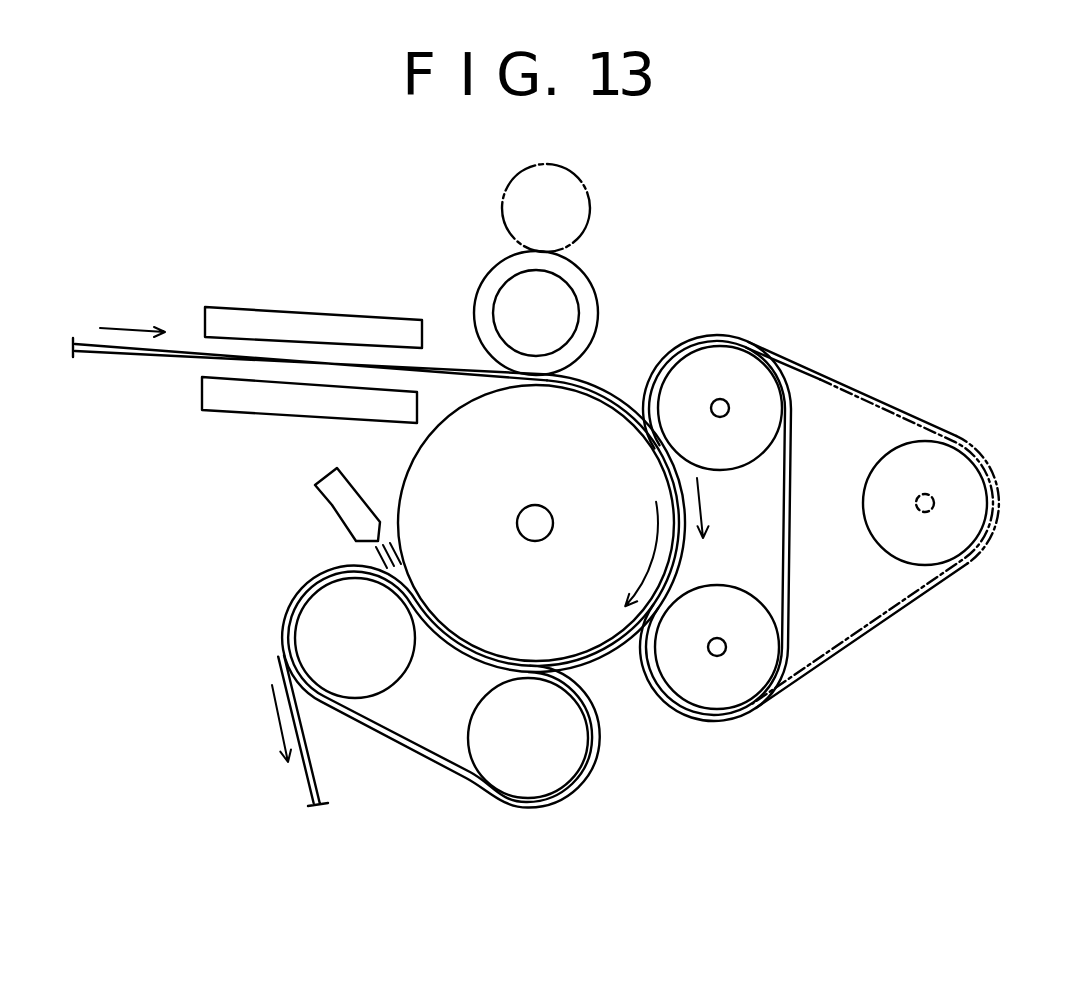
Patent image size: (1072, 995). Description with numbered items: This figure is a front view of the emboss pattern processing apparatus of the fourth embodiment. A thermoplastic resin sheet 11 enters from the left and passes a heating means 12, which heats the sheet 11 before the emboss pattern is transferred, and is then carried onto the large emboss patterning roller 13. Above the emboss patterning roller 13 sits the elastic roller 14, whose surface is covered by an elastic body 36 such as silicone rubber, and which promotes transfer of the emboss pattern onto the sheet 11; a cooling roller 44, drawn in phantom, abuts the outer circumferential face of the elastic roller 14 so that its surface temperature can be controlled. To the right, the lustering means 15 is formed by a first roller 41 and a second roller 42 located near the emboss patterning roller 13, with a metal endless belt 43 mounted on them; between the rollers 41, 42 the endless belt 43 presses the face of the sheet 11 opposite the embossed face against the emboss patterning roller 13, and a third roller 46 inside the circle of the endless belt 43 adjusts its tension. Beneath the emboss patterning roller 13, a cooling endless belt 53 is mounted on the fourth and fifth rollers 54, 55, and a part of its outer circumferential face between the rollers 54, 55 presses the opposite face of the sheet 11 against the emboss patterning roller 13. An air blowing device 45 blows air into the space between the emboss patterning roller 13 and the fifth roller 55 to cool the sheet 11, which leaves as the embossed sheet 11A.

The thermoplastic resin sheet 11 is at (108, 357).
The embossed sheet 11A is at (310, 778).
The heating means 12 is at (300, 322).
The emboss patterning roller 13 is at (600, 625).
The elastic roller 14 is at (562, 302).
The lustering means 15 is at (823, 550).
The elastic body 36 is at (490, 285).
The first roller 41 is at (738, 368).
The second roller 42 is at (723, 603).
The endless belt 43 is at (797, 480).
The cooling roller 44 is at (588, 195).
The air blowing device 45 is at (338, 502).
The third roller 46 is at (907, 440).
The cooling endless belt 53 is at (413, 753).
The fourth roller 54 is at (560, 768).
The fifth roller 55 is at (328, 623).